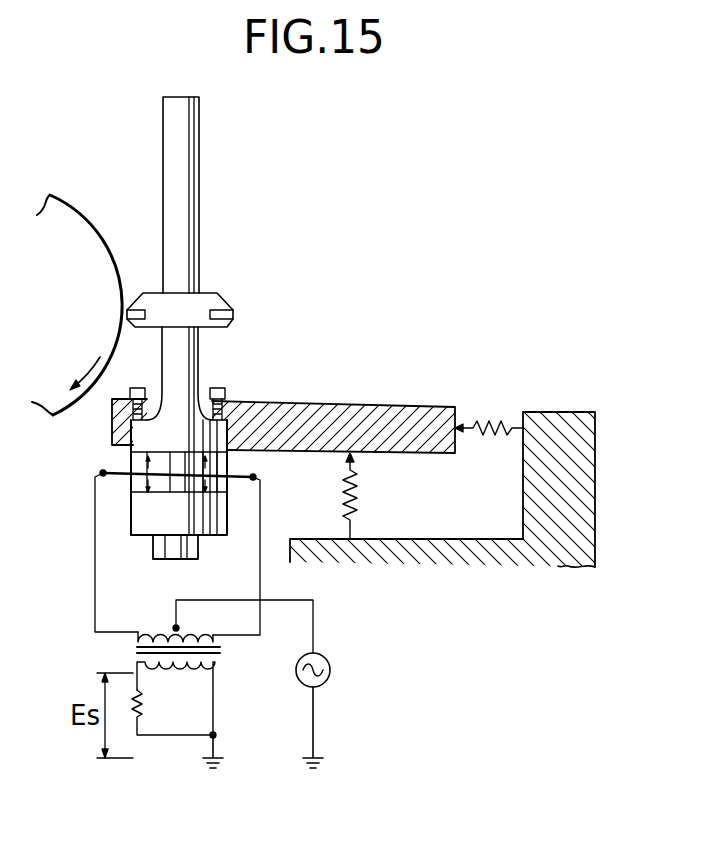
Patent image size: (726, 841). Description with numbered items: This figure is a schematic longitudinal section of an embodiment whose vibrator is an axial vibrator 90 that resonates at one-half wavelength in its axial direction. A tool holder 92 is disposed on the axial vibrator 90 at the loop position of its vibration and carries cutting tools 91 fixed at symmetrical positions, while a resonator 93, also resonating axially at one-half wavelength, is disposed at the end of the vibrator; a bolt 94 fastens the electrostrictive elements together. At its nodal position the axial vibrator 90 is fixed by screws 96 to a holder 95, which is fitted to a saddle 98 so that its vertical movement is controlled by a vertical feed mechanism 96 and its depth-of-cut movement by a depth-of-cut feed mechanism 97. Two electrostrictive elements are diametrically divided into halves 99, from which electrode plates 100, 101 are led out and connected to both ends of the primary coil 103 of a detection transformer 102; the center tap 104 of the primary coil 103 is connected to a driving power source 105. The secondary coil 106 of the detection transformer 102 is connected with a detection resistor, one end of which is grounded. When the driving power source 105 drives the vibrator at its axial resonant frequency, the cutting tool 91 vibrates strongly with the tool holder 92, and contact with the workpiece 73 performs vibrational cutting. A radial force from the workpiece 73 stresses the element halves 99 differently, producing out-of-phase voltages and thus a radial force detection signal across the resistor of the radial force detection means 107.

The workpiece 73 is at (80, 242).
The axial vibrator 90 is at (143, 513).
The cutting tools 91 is at (128, 310).
The tool holder 92 is at (203, 302).
The resonator 93 is at (185, 178).
The bolt 94 is at (155, 548).
The holder 95 is at (352, 410).
The screws / vertical feed mechanism 96 is at (137, 388).
The depth-of-cut feed mechanism 97 is at (497, 432).
The saddle 98 is at (565, 425).
The electrostrictive element halves 99 is at (132, 460).
The electrode plate 100 is at (103, 470).
The electrode plate 101 is at (253, 478).
The detection transformer 102 is at (130, 650).
The primary coil 103 is at (150, 630).
The center tap 104 is at (172, 625).
The driving power source 105 is at (330, 670).
The secondary coil 106 is at (187, 663).
The radial force detection means 107 is at (137, 640).